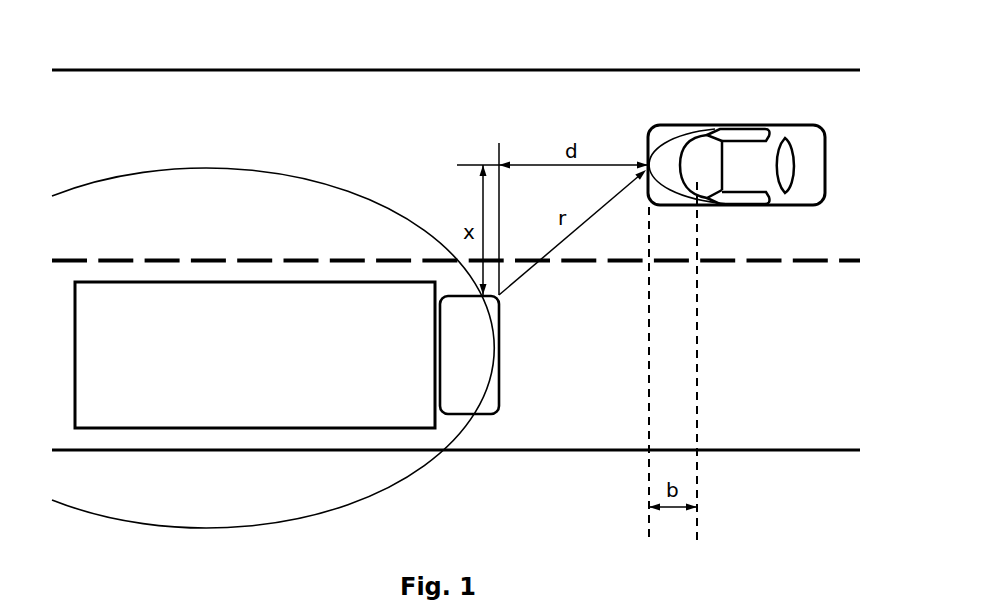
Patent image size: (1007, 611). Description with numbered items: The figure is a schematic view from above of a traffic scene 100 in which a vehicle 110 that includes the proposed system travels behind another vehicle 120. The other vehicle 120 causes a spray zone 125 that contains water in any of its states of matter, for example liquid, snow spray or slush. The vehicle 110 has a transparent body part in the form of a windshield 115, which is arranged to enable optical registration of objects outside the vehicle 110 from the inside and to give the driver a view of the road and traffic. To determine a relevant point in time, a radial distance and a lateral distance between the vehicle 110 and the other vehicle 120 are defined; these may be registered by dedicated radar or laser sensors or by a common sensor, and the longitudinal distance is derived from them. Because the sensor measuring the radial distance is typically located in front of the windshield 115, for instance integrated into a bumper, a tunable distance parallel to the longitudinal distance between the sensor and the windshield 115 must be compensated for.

The roadway / driving environment 100 is at (456, 234).
The vehicle 110 is at (843, 56).
The windshield 115 is at (626, 146).
The another vehicle 120 is at (537, 367).
The spray zone 125 is at (273, 327).